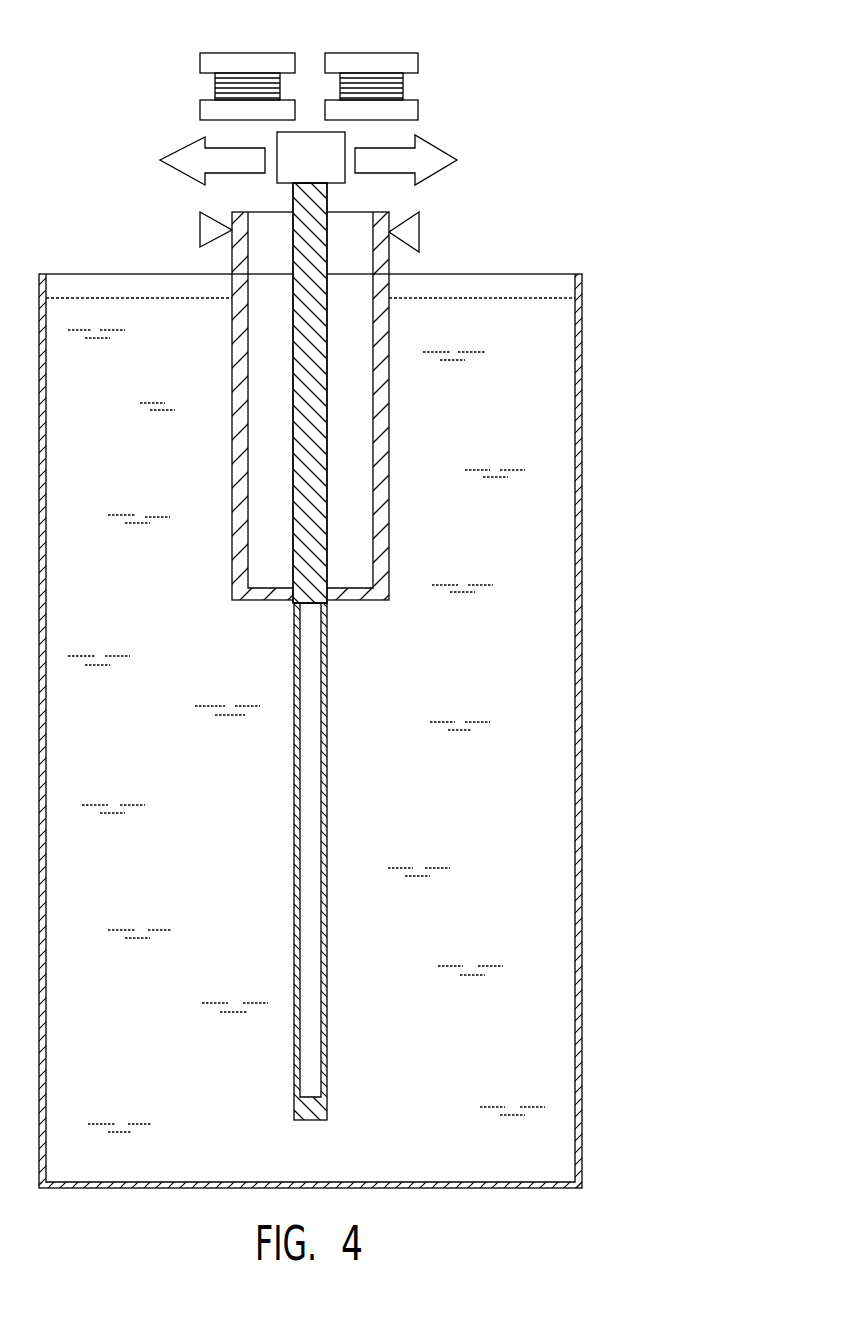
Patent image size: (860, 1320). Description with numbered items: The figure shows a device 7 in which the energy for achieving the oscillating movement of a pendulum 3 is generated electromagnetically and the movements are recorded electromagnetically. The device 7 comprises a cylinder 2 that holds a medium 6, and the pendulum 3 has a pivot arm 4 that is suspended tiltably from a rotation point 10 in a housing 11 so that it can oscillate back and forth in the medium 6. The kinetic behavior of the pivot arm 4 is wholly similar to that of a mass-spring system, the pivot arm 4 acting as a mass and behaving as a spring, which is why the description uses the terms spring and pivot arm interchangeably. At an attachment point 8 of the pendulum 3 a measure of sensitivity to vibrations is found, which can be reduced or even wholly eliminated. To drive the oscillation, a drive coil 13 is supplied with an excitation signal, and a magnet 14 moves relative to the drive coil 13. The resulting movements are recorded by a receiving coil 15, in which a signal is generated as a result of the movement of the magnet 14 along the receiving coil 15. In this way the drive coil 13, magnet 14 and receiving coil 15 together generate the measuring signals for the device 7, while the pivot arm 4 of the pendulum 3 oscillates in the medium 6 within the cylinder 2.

The cylinder 2 is at (575, 383).
The pendulum 3 is at (435, 425).
The pivot arm 4 is at (308, 817).
The medium 6 is at (418, 695).
The device 7 is at (535, 245).
The attachment point 8 is at (200, 230).
The rotation point 10 is at (315, 578).
The housing 11 is at (236, 367).
The drive coil 13 is at (233, 62).
The magnet 14 is at (308, 158).
The receiving coil 15 is at (387, 63).